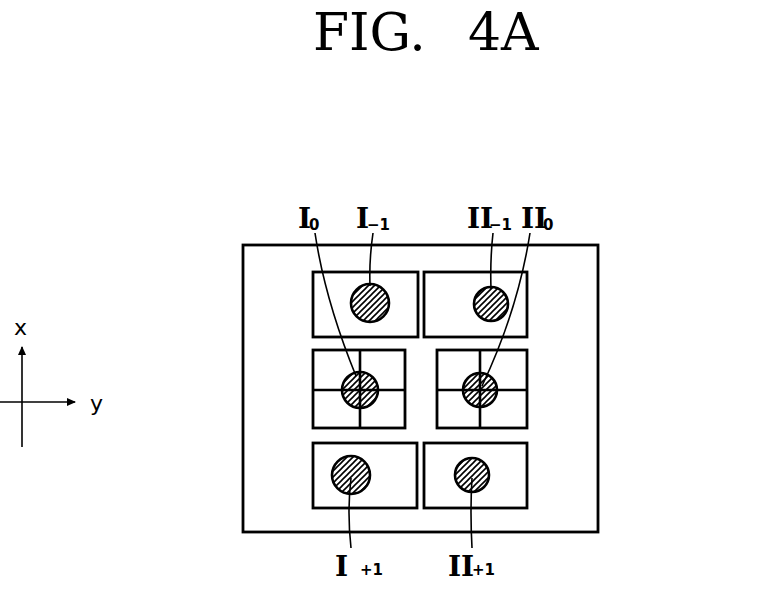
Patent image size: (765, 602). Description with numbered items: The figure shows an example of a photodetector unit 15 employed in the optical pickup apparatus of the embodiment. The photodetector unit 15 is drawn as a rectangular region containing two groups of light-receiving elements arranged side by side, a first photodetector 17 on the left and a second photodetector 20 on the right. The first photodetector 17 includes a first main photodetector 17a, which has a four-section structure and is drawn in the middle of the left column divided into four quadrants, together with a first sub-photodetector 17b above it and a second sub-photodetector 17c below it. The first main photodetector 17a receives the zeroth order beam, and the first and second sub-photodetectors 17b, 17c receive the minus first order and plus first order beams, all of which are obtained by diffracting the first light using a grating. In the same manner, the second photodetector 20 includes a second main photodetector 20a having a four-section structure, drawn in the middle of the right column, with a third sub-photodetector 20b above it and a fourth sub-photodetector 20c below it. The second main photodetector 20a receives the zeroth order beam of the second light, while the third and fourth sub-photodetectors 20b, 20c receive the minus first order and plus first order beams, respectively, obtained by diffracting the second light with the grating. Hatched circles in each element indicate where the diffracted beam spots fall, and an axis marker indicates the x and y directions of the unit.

The photodetector unit 15 is at (568, 218).
The first photodetector 17 is at (271, 390).
The first main photodetector 17a is at (313, 379).
The first sub-photodetector 17b is at (313, 305).
The second sub-photodetector 17c is at (313, 475).
The second photodetector 20 is at (572, 390).
The second main photodetector 20a is at (527, 380).
The third sub-photodetector 20b is at (527, 305).
The fourth sub-photodetector 20c is at (527, 475).